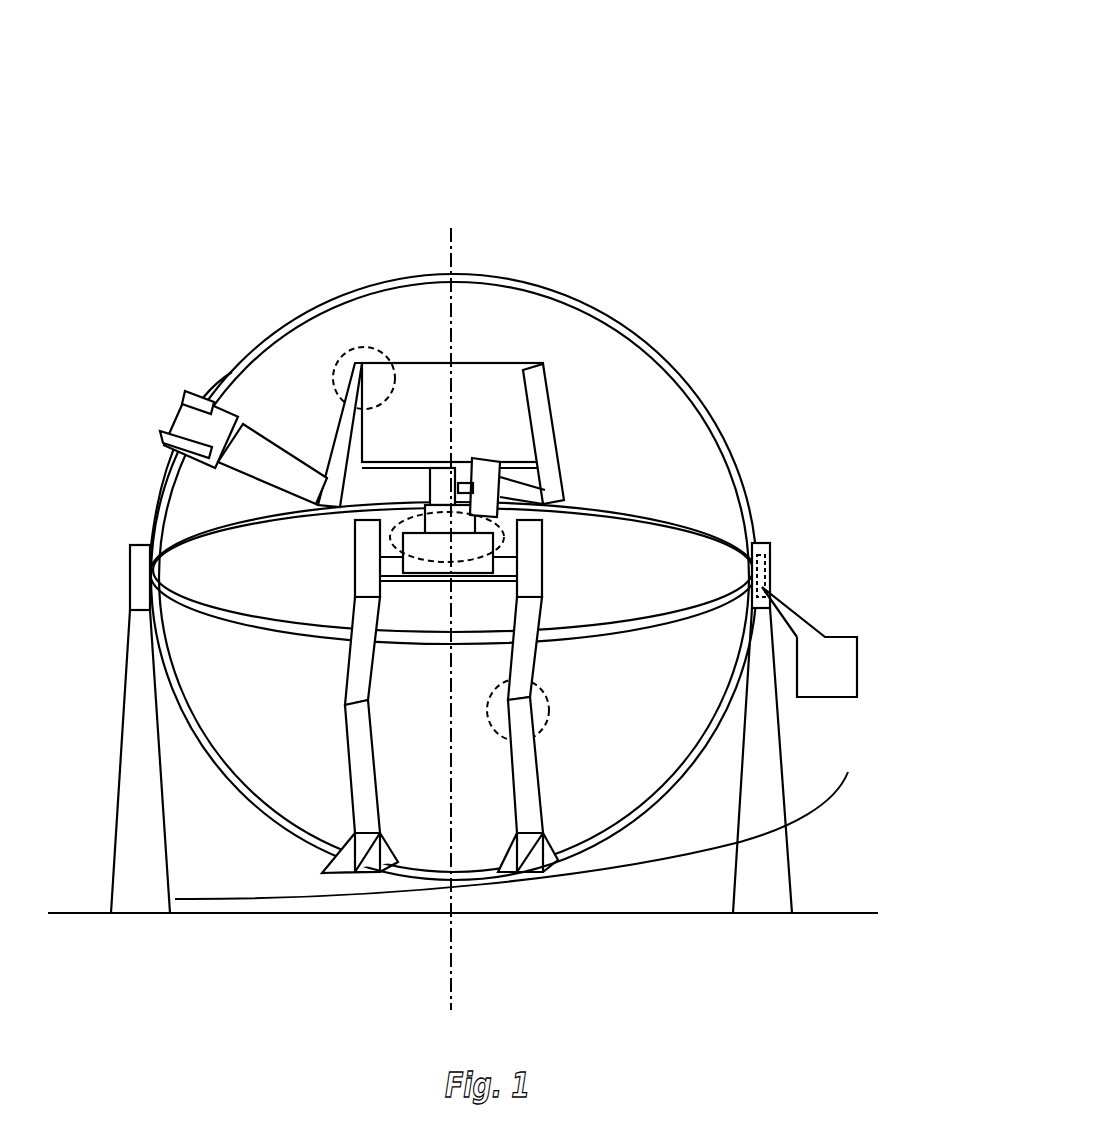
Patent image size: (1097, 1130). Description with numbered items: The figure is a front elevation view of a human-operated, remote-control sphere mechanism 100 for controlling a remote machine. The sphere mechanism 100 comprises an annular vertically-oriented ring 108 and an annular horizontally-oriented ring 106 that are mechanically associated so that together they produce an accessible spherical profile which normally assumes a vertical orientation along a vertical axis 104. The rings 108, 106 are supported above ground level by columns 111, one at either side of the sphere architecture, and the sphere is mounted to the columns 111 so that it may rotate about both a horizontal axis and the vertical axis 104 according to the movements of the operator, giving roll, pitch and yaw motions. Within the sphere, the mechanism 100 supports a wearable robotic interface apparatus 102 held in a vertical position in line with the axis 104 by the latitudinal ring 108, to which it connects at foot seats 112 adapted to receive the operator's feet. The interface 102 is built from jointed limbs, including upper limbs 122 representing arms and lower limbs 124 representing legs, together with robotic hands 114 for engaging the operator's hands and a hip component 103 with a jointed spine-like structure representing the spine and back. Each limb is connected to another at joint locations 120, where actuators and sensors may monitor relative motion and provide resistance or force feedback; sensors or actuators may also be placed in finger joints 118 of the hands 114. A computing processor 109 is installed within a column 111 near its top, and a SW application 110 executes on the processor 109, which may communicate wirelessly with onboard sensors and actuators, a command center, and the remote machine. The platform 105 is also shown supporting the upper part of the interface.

The sphere mechanism 100 is at (650, 118).
The wearable robotic interface apparatus 102 is at (605, 418).
The hip component 103 is at (552, 537).
The vertical axis 104 is at (455, 272).
The platform 105 is at (434, 363).
The horizontally-oriented ring 106 is at (243, 594).
The vertically-oriented ring 108 is at (706, 420).
The computing processor 109 is at (770, 565).
The SW application 110 is at (834, 637).
The column 111 is at (785, 800).
The foot seat 112 is at (522, 828).
The robotic hand 114 is at (322, 507).
The finger joint 118 is at (430, 490).
The joint location 120 is at (458, 562).
The upper limb 122 is at (367, 430).
The lower limb 124 is at (510, 762).